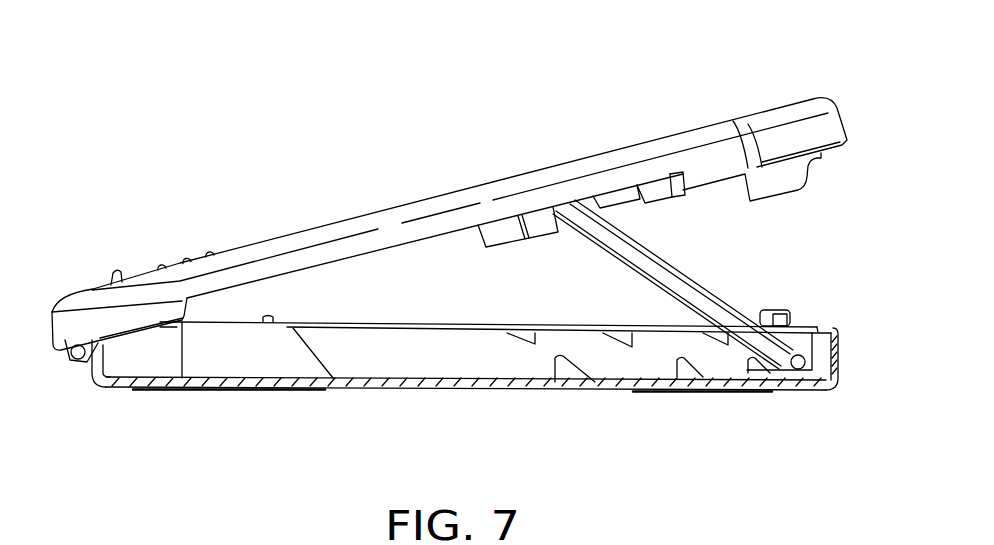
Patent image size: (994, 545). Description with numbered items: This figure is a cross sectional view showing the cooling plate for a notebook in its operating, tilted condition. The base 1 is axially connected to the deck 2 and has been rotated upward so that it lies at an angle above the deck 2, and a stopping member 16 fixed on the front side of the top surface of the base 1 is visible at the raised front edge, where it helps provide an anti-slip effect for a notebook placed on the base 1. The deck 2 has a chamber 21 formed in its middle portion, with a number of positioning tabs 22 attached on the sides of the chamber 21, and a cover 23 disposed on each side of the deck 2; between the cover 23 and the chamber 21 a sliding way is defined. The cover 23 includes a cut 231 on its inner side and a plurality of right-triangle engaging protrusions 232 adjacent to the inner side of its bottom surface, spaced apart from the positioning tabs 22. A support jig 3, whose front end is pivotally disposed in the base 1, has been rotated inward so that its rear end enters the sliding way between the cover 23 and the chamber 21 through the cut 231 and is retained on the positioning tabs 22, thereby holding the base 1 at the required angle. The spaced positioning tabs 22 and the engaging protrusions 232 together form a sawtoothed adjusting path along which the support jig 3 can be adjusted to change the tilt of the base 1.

The base 1 is at (801, 101).
The deck 2 is at (845, 323).
The support jig 3 is at (728, 295).
The stopping member 16 is at (117, 276).
The chamber 21 is at (373, 373).
The positioning tabs 22 is at (560, 375).
The cover 23 is at (462, 328).
The cut 231 is at (345, 327).
The engaging protrusions 232 is at (625, 335).